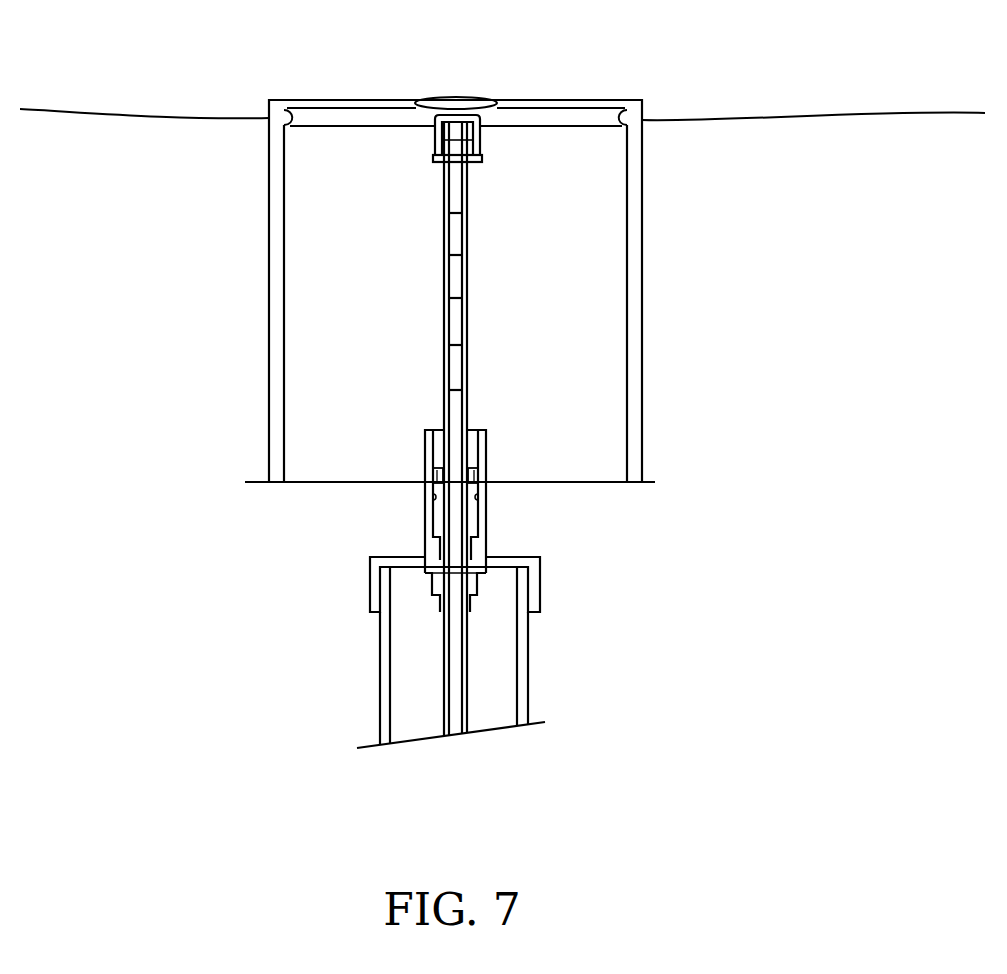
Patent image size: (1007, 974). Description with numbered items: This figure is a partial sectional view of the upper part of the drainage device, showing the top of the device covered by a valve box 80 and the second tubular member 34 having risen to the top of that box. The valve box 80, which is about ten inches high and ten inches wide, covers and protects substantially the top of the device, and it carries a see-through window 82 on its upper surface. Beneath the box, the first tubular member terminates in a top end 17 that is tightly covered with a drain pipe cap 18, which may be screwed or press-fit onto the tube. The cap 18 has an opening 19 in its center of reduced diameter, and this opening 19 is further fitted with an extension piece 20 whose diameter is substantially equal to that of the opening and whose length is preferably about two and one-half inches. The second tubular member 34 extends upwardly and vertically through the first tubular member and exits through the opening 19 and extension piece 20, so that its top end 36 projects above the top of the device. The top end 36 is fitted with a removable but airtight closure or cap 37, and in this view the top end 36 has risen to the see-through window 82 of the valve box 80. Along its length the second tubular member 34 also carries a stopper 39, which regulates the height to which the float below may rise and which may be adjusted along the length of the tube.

The valve box 80 is at (283, 118).
The see-through window 82 is at (449, 98).
The top end of the second tubular member 36 is at (437, 149).
The airtight closure or cap 37 is at (477, 128).
The second tubular member 34 is at (455, 677).
The opening 19 is at (433, 513).
The extension piece 20 is at (480, 538).
The stopper 39 is at (432, 600).
The top end of the first tubular member 17 is at (386, 582).
The drain pipe cap 18 is at (533, 590).